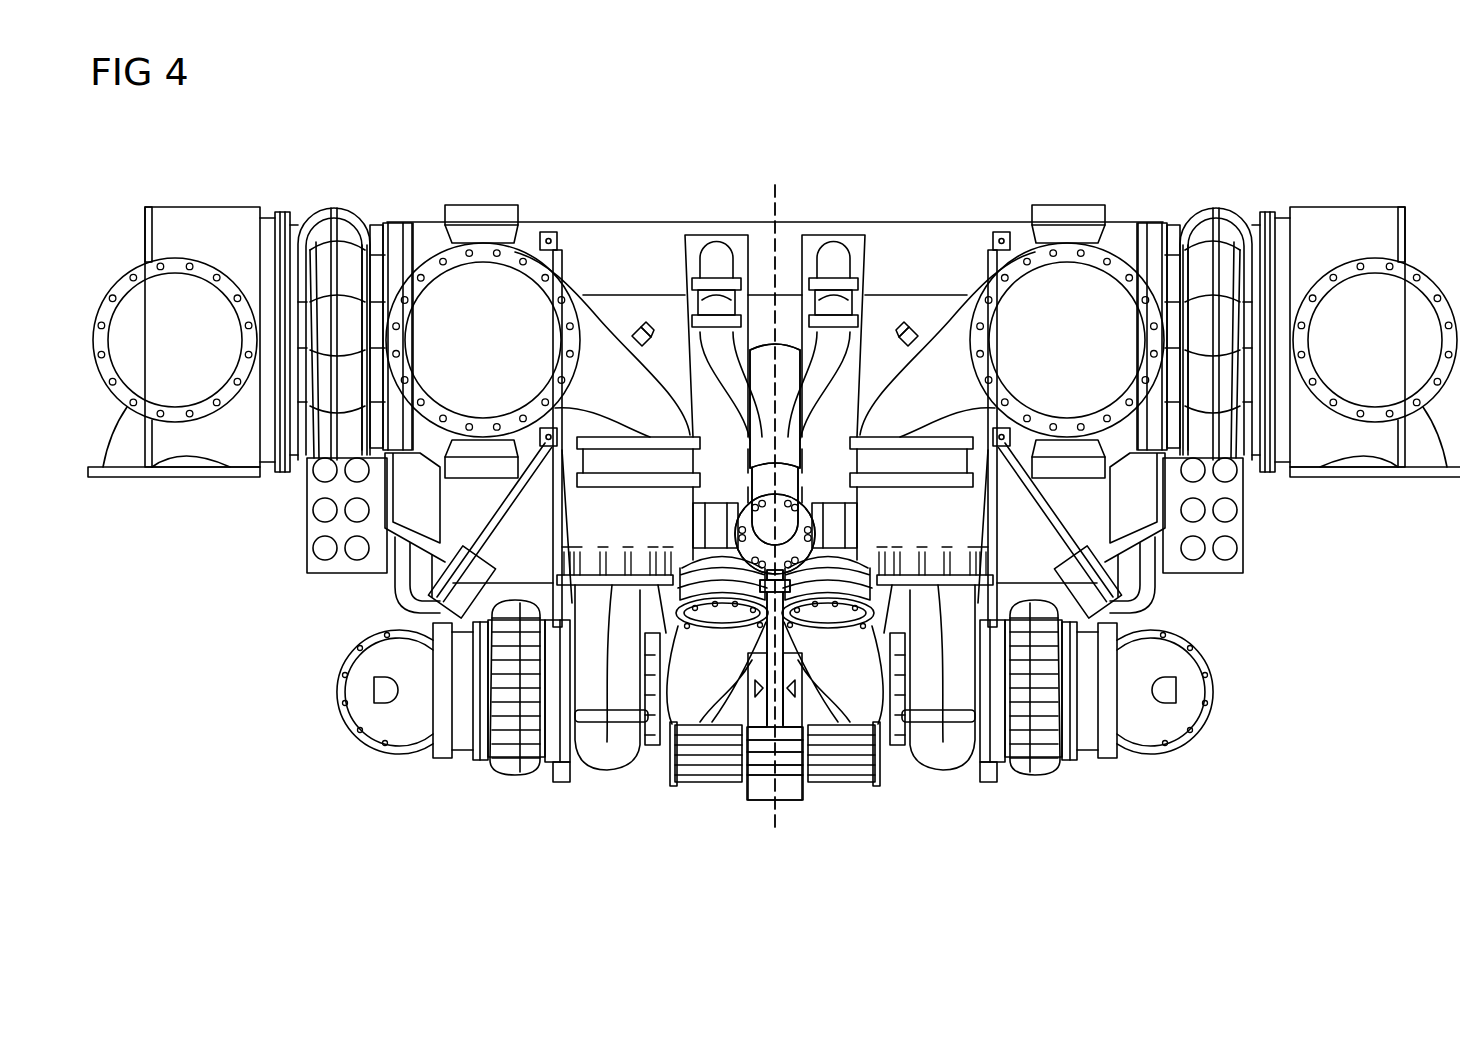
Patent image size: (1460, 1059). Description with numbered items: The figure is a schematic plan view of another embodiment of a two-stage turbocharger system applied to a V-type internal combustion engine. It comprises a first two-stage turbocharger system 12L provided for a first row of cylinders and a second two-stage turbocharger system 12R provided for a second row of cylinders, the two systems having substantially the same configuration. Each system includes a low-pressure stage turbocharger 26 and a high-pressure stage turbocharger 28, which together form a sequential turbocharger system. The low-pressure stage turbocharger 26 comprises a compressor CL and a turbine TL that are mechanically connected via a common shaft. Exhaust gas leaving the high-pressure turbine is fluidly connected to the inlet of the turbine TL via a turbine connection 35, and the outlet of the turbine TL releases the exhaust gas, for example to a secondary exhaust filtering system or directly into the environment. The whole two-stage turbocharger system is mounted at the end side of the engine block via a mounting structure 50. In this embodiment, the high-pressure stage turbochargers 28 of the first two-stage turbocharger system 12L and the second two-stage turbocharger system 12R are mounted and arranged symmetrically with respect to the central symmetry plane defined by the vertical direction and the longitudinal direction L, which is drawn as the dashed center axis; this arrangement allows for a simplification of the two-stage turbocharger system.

The first two-stage turbocharger system 12L is at (286, 180).
The second two-stage turbocharger system 12R is at (1264, 180).
The low-pressure stage turbocharger 26 is at (374, 190).
The high-pressure stage turbocharger 28 is at (502, 811).
The turbine connection 35 is at (598, 342).
The mounting structure 50 is at (903, 222).
The compressor CL is at (165, 222).
The turbine TL is at (517, 250).
The longitudinal direction L is at (775, 830).